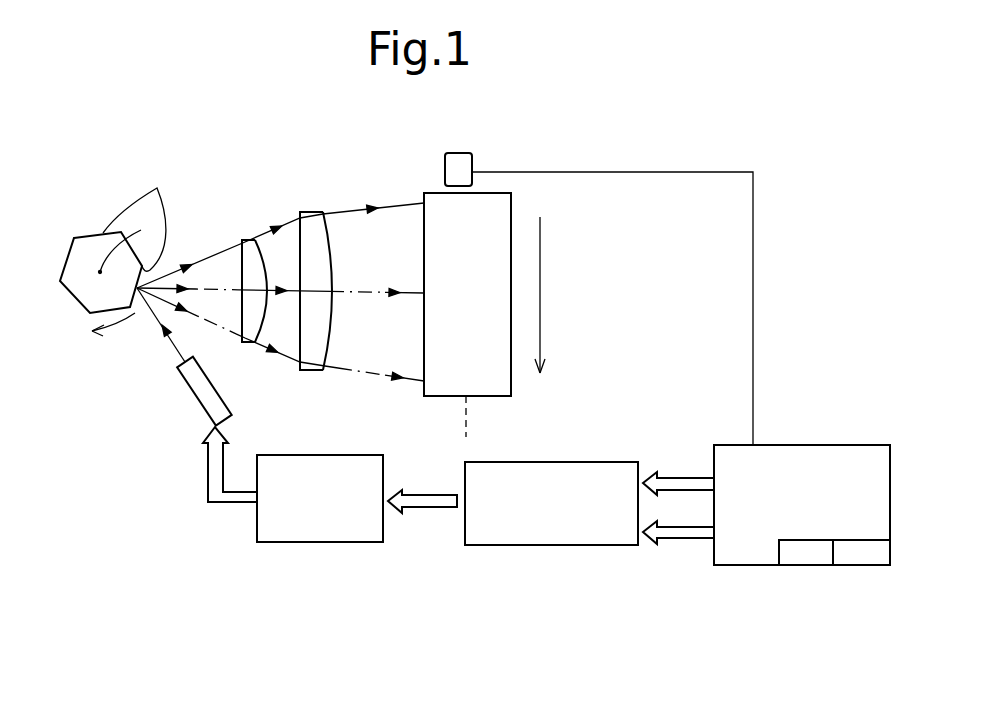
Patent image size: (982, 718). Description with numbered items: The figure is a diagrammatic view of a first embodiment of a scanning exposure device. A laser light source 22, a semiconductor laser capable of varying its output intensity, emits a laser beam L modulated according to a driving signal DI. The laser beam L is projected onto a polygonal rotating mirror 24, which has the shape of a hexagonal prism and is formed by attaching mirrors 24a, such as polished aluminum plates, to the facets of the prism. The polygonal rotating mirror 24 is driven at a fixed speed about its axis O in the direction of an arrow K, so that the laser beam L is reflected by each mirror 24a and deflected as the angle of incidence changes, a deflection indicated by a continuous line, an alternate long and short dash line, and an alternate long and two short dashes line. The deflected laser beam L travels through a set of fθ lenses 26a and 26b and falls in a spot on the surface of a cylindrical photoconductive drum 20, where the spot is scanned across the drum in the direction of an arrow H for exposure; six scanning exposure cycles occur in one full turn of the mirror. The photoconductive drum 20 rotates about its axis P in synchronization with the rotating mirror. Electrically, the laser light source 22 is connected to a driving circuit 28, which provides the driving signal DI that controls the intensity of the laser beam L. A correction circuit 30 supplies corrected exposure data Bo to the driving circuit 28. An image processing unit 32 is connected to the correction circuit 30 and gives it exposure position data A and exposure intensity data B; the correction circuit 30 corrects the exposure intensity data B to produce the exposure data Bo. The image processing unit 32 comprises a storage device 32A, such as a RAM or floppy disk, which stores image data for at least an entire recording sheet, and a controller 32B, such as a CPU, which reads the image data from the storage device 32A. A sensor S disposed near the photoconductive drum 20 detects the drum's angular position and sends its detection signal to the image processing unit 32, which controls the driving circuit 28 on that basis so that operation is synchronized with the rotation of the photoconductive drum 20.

The photoconductive drum 20 is at (511, 375).
The laser light source 22 is at (197, 391).
The polygonal rotating mirror 24 is at (103, 237).
The mirror 24a is at (161, 184).
The fθ lens 26a is at (243, 238).
The fθ lens 26b is at (308, 212).
The driving circuit 28 is at (321, 460).
The correction circuit 30 is at (560, 468).
The image processing unit 32 is at (844, 453).
The storage device 32A is at (858, 562).
The controller 32B is at (807, 562).
The sensor S is at (462, 153).
The arrow H is at (555, 295).
The axis P is at (463, 430).
The arrow K is at (113, 336).
The laser beam L is at (181, 344).
The axis O is at (148, 225).
The driving signal DI is at (215, 464).
The exposure data Bo is at (422, 491).
The exposure position data A is at (678, 471).
The exposure intensity data B is at (678, 521).